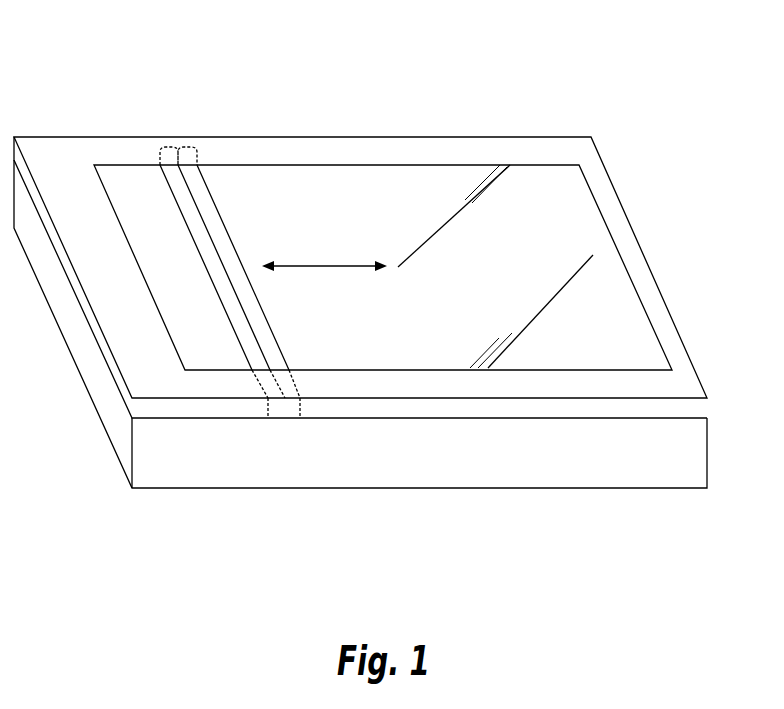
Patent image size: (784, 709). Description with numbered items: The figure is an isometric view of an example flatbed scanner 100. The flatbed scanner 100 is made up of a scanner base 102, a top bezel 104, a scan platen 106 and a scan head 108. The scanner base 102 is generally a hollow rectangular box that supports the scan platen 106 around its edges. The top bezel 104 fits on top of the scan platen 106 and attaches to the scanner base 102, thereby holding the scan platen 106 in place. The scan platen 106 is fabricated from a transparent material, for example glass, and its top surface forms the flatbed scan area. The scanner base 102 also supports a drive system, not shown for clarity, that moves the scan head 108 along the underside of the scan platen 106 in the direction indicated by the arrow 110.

The flatbed scanner 100 is at (118, 84).
The scanner base 102 is at (709, 460).
The top bezel 104 is at (709, 408).
The scan platen 106 is at (572, 222).
The scan head 108 is at (225, 220).
The arrow 110 is at (324, 257).